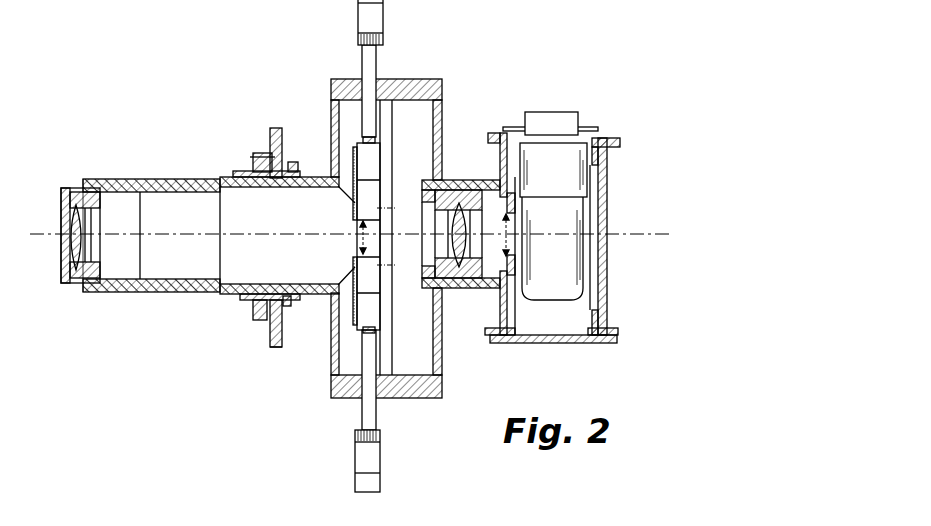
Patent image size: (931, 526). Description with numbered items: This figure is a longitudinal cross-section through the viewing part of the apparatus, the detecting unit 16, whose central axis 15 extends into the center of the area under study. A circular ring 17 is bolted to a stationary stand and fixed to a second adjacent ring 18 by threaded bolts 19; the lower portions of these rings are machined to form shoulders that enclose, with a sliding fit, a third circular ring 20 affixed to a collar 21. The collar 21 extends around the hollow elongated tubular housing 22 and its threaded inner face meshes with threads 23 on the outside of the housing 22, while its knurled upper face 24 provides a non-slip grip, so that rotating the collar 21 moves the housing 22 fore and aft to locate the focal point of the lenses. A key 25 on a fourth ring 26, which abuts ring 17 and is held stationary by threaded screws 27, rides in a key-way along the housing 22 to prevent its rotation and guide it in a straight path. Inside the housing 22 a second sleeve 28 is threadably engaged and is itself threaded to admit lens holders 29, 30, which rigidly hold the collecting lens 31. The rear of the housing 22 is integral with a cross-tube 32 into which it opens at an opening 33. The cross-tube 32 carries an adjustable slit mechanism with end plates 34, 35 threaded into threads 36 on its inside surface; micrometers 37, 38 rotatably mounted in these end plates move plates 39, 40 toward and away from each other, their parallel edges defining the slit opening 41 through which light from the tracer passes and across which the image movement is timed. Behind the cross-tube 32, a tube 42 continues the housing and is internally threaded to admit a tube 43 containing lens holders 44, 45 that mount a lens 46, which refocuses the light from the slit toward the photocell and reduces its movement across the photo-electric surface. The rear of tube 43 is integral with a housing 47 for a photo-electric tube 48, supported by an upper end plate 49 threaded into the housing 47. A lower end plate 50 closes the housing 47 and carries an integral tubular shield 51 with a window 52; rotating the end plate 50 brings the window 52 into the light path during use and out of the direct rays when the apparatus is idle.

The central axis 15 is at (645, 232).
The detecting unit 16 is at (147, 179).
The circular ring 17 is at (281, 350).
The second adjacent ring 18 is at (275, 327).
The threaded bolts 19 is at (255, 157).
The third circular ring 20 is at (260, 306).
The collar 21 is at (243, 177).
The tubular housing 22 is at (107, 179).
The threads 23 is at (174, 180).
The upper face 24 is at (232, 300).
The key 25 is at (300, 172).
The fourth ring 26 is at (287, 303).
The threaded screws 27 is at (289, 160).
The second sleeve 28 is at (75, 187).
The lens holder 29 is at (62, 198).
The lens holder 30 is at (96, 195).
The collecting lens 31 is at (72, 245).
The cross-tube 32 is at (331, 84).
The opening 33 is at (336, 197).
The end plate 34 is at (416, 79).
The end plate 35 is at (405, 397).
The threads 36 is at (350, 80).
The micrometer 37 is at (385, 20).
The micrometer 38 is at (353, 460).
The plate 39 is at (353, 208).
The plate 40 is at (353, 262).
The slit opening 41 is at (360, 238).
The tube 42 is at (457, 180).
The tube 43 is at (432, 181).
The lens holder 44 is at (420, 200).
The lens holder 45 is at (498, 190).
The lens 46 is at (450, 250).
The housing 47 is at (607, 178).
The photo-electric tube 48 is at (577, 156).
The upper end plate 49 is at (610, 137).
The end plate 50 is at (590, 344).
The tubular shield 51 is at (598, 281).
The window 52 is at (508, 233).